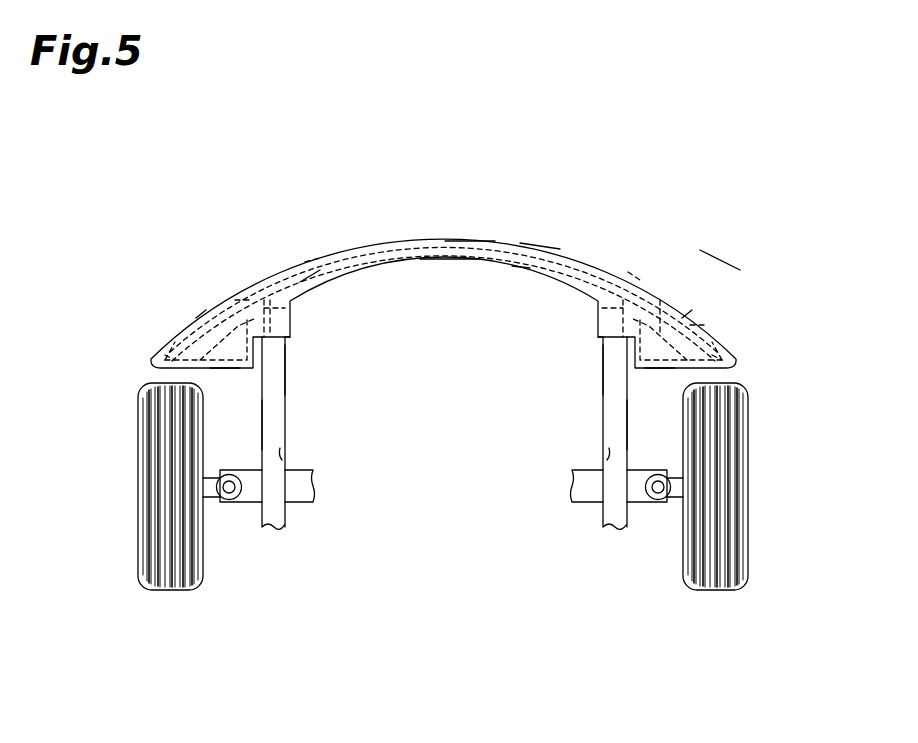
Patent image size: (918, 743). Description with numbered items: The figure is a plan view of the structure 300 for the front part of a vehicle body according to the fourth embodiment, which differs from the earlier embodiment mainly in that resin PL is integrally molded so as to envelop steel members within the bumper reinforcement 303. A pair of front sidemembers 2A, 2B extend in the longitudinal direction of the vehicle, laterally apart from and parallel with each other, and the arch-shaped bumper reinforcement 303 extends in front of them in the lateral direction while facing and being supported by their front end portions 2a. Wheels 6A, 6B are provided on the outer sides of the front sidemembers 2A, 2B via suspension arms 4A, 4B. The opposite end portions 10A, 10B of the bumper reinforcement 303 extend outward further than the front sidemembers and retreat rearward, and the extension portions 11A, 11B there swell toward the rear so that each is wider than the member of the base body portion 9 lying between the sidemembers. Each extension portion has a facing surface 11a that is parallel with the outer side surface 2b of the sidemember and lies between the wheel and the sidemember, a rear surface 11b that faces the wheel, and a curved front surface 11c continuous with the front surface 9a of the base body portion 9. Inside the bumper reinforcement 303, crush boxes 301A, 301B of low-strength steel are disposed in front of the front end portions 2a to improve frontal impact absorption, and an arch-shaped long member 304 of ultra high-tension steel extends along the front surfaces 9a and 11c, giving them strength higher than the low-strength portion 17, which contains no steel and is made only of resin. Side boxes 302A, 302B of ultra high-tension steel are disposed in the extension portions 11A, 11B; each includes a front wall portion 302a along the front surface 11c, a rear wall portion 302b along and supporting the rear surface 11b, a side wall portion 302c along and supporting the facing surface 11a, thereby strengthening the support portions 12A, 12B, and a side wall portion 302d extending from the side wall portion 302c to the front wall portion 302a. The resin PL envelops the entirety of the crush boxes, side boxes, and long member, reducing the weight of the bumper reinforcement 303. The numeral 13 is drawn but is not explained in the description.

The structure for a front part of a vehicle body 300 is at (259, 210).
The upper bar 13 is at (423, 240).
The arch-shaped long member 304 is at (470, 241).
The front surface of the base body portion 9a is at (533, 243).
The base body portion 9 is at (449, 265).
The resin PL is at (525, 270).
The low-strength portion 17 is at (310, 283).
The bumper reinforcement 303 is at (723, 258).
The side box 302A is at (155, 350).
The side box 302B is at (736, 360).
The crush box 301A is at (292, 322).
The crush box 301B is at (597, 310).
The front wall portion 302a is at (236, 300).
The rear wall portion 302b is at (170, 352).
The side wall portion 302c is at (312, 262).
The side wall portion 302d is at (271, 300).
The end portion of the bumper reinforcement 10A is at (136, 278).
The end portion of the bumper reinforcement 10B is at (745, 316).
The extension portion 11A is at (186, 300).
The extension portion 11B is at (722, 318).
The front surface of the extension portion 11c is at (202, 318).
The rear surface 11b is at (225, 370).
The facing surface 11a is at (287, 372).
The support portion 12A is at (330, 424).
The support portion 12B is at (578, 410).
The front sidemember 2A is at (283, 438).
The front sidemember 2B is at (608, 432).
The front end portion 2a is at (290, 350).
The outer side surface 2b is at (278, 455).
The suspension arm 4A is at (298, 495).
The suspension arm 4B is at (588, 495).
The wheel 6A is at (163, 489).
The wheel 6B is at (715, 486).